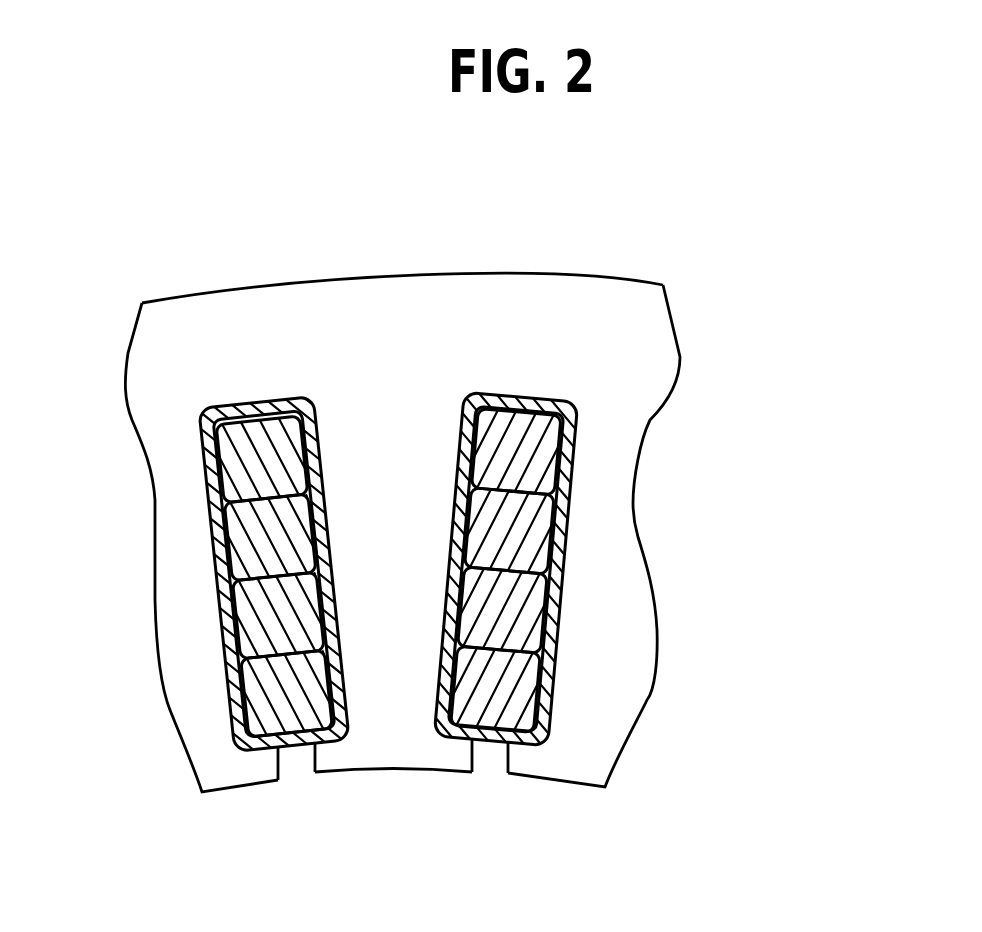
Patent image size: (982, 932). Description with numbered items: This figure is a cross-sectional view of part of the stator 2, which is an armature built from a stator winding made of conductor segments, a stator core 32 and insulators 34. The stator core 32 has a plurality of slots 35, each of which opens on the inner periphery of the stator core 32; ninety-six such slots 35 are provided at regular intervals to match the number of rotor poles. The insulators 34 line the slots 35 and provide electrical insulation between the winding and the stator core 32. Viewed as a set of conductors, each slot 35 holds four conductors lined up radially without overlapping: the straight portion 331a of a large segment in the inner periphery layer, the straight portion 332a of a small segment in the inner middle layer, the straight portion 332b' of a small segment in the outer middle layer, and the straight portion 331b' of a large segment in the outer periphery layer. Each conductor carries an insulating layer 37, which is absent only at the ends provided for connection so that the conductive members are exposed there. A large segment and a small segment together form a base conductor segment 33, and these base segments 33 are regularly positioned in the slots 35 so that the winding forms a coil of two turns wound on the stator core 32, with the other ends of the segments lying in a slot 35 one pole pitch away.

The stator 2 is at (640, 222).
The stator core 32 is at (422, 307).
The base conductor segment 33 is at (793, 435).
The insulator 34 is at (563, 397).
The slot 35 is at (293, 755).
The insulating layer 37 is at (227, 472).
The conductor in the inner periphery layer 331a is at (514, 703).
The conductor in the outer periphery layer 331b' is at (613, 452).
The conductor in the inner middle layer 332a is at (516, 623).
The conductor in the outer middle layer 332b' is at (610, 531).